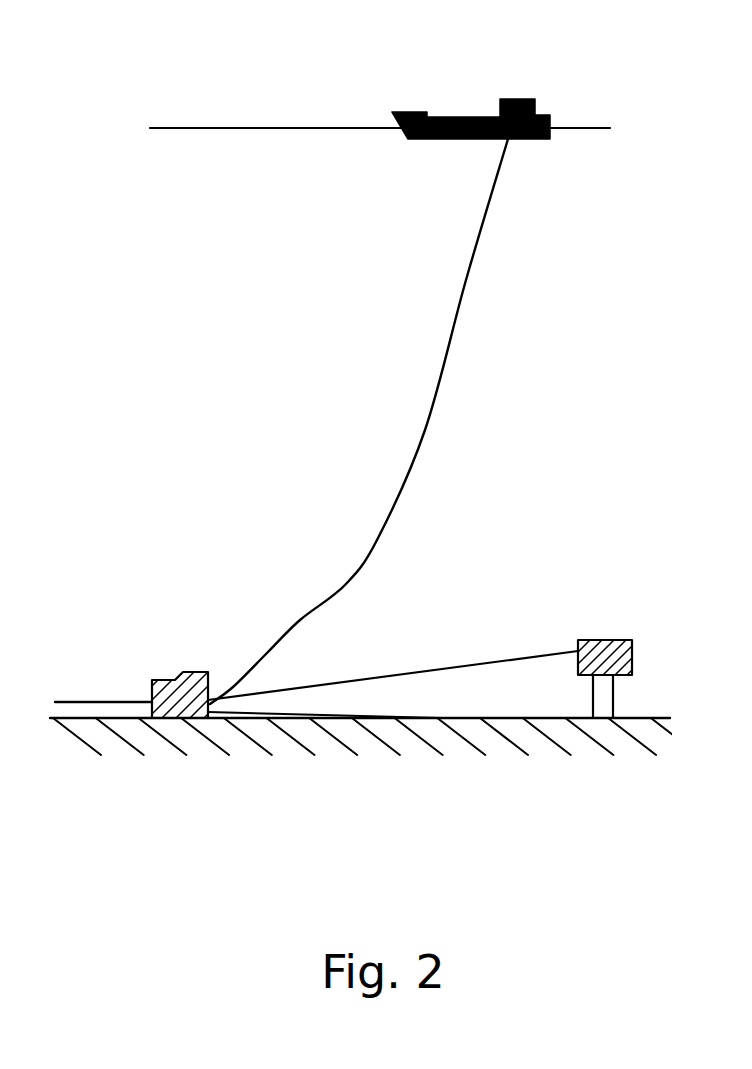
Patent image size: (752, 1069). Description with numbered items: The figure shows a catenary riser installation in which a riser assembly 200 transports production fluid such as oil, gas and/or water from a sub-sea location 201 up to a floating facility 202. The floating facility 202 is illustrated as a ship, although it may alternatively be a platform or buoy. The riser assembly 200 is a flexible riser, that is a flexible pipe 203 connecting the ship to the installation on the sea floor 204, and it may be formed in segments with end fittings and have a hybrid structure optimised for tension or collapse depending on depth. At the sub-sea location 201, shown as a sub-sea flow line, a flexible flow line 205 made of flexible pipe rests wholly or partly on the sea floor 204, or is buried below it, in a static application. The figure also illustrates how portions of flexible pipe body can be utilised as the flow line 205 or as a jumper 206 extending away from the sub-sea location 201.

The riser assembly 200 is at (553, 279).
The sub-sea location 201 is at (165, 683).
The floating facility 202 is at (417, 112).
The riser 203 is at (378, 542).
The sea floor 204 is at (463, 719).
The flexible flow line 205 is at (100, 700).
The jumper 206 is at (527, 658).